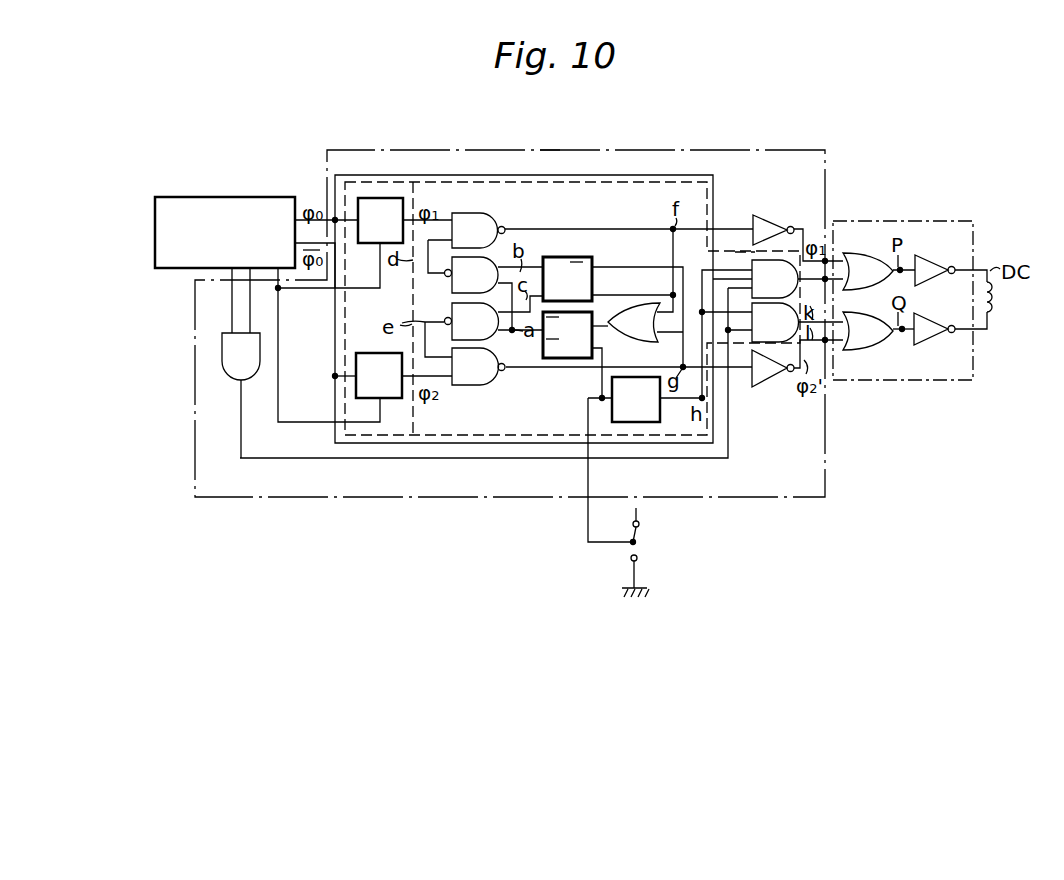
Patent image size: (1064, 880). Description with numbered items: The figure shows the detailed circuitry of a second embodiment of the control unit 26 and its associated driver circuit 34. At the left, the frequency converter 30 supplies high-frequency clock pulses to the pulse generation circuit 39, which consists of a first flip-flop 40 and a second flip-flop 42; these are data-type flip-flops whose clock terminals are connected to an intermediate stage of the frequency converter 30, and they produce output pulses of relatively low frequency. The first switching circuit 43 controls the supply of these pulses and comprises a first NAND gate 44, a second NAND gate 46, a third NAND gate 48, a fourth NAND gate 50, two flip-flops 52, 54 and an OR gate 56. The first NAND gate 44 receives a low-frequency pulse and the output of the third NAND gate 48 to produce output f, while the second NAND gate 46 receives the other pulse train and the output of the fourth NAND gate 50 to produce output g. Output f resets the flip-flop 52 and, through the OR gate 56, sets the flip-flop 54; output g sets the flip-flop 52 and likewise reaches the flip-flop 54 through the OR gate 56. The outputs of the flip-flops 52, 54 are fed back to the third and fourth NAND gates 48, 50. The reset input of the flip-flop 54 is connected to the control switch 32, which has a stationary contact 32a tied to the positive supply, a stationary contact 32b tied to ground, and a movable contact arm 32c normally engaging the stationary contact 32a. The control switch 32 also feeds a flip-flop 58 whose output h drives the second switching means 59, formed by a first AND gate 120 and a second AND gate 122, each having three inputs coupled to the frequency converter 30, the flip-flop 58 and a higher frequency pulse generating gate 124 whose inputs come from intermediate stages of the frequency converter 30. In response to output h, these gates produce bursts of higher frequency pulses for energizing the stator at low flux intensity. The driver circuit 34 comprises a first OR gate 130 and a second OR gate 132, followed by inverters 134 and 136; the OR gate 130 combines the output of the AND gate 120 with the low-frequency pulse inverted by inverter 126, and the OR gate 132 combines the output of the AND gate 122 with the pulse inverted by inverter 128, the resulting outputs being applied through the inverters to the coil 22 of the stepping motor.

The frequency converter 30 is at (250, 197).
The pulse generation circuit 39 is at (370, 180).
The first flip-flop 40 is at (390, 197).
The second flip-flop 42 is at (392, 400).
The first switching circuit 43 is at (440, 180).
The control unit 26 is at (537, 149).
The first NAND gate 44 is at (470, 225).
The second NAND gate 46 is at (474, 382).
The third NAND gate 48 is at (460, 282).
The fourth NAND gate 50 is at (462, 312).
The flip-flop 52 is at (570, 257).
The flip-flop 54 is at (565, 358).
The OR gate 56 is at (622, 318).
The flip-flop 58 is at (664, 422).
The second switching means 59 is at (732, 251).
The first AND gate 120 is at (778, 262).
The second AND gate 122 is at (760, 335).
The higher frequency pulse generating gate 124 is at (228, 370).
The inverter 126 is at (774, 219).
The inverter 128 is at (782, 378).
The first OR gate 130 is at (865, 252).
The second OR gate 132 is at (866, 347).
The inverter 134 is at (938, 260).
The inverter 136 is at (930, 346).
The driver circuit 34 is at (925, 221).
The motor coil 22 is at (992, 303).
The control switch 32 is at (639, 504).
The stationary contact 32a is at (632, 522).
The stationary contact 32b is at (640, 561).
The movable contact arm 32c is at (642, 533).